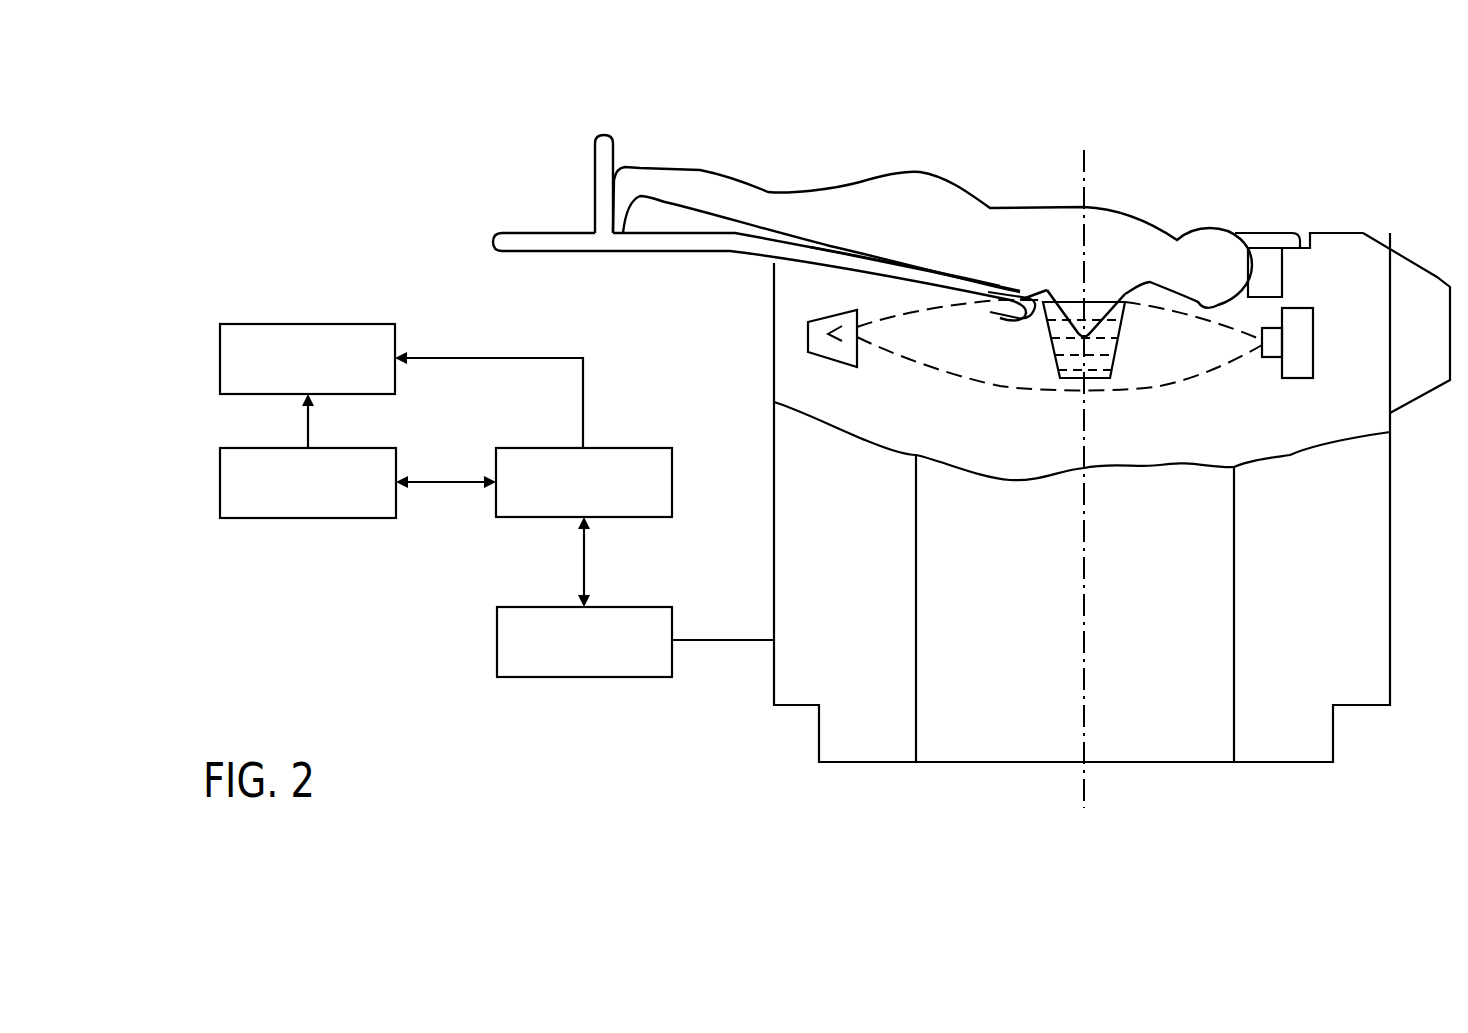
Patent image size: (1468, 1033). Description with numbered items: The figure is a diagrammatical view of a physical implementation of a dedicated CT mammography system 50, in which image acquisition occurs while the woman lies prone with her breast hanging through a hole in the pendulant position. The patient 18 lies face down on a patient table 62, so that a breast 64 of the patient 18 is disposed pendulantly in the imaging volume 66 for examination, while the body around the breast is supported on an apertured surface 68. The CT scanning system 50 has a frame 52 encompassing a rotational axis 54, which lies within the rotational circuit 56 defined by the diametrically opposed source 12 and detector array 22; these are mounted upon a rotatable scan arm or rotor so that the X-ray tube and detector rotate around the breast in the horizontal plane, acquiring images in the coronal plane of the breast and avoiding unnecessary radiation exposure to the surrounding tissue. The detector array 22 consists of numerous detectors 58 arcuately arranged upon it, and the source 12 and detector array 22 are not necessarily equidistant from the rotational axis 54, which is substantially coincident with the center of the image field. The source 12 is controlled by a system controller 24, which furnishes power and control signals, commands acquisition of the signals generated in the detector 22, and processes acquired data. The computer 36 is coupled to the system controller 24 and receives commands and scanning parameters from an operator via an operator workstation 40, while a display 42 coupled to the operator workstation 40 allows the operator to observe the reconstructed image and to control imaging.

The source 12 is at (818, 320).
The patient 18 is at (1026, 207).
The detector array 22 is at (1336, 334).
The system controller 24 is at (497, 641).
The computer 36 is at (630, 447).
The operator workstation 40 is at (372, 447).
The display 42 is at (302, 323).
The CT mammography system 50 is at (1377, 148).
The frame 52 is at (1400, 540).
The rotational axis 54 is at (1084, 177).
The rotational circuit 56 is at (978, 388).
The detectors 58 is at (1273, 358).
The patient table 62 is at (566, 253).
The breast 64 is at (1050, 337).
The imaging volume 66 is at (1134, 346).
The apertured surface 68 is at (1017, 292).